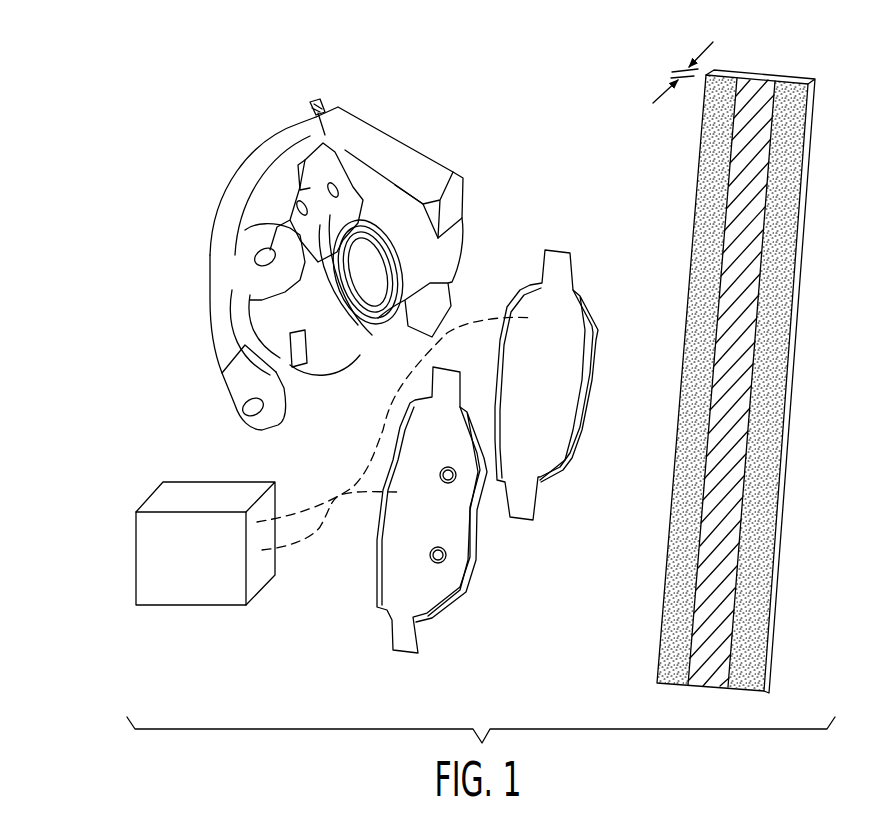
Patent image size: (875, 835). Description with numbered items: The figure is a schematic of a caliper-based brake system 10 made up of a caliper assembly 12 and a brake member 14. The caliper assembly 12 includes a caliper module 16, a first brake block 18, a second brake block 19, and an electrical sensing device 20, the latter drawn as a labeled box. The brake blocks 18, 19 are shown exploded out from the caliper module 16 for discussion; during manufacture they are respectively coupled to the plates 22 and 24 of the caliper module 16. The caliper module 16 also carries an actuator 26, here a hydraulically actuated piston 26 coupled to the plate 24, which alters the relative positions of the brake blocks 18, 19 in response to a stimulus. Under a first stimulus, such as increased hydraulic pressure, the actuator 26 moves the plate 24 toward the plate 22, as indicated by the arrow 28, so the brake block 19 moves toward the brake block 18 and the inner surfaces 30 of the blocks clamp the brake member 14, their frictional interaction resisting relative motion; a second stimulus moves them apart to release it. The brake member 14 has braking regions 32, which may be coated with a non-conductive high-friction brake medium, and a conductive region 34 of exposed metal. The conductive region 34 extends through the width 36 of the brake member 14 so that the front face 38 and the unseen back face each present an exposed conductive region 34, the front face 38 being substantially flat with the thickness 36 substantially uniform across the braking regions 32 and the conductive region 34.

The brake system 10 is at (315, 236).
The caliper assembly 12 is at (343, 91).
The brake member 14 is at (730, 370).
The caliper module 16 is at (315, 255).
The first brake block 18 is at (415, 583).
The second brake block 19 is at (553, 324).
The electrical sensing device 20 is at (175, 498).
The plate 22 is at (290, 379).
The plate 24 is at (306, 227).
The actuator 26 is at (365, 260).
The arrow 28 is at (304, 396).
The inner surfaces 30 is at (525, 449).
The braking regions 32 is at (672, 667).
The conductive region 34 is at (758, 98).
The width 36 is at (674, 79).
The front face 38 is at (781, 208).